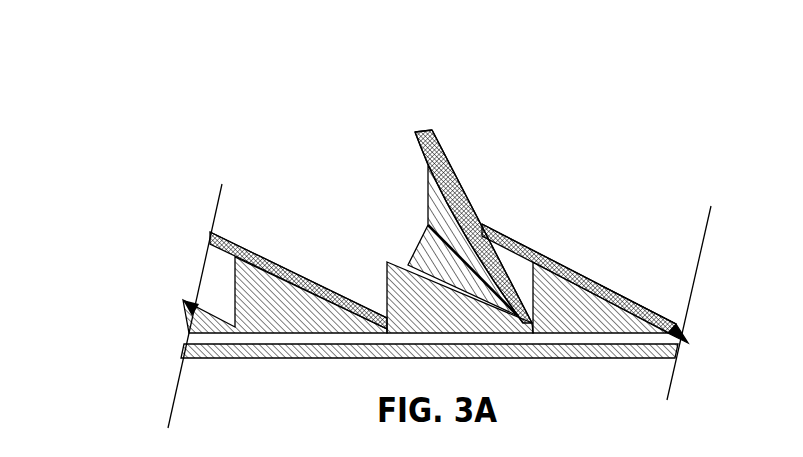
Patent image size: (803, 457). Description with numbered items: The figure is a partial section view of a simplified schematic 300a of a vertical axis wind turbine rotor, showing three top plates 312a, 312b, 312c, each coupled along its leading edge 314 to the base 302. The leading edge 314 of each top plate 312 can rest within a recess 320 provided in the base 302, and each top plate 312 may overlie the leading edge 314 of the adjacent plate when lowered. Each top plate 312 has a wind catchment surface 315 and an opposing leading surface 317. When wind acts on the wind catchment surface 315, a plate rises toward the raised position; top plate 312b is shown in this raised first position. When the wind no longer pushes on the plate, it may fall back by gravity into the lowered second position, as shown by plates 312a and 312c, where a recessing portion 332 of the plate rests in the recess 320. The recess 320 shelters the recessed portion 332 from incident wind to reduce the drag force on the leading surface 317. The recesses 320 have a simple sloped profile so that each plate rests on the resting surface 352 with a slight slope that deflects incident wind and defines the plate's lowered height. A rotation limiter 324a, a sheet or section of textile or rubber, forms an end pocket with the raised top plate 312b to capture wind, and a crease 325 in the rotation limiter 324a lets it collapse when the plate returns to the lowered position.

The schematic 300a is at (200, 110).
The base 302 is at (542, 337).
The top plate 312 is at (521, 234).
The top plate 312a is at (262, 250).
The top plate 312b is at (427, 130).
The top plate 312c is at (612, 278).
The leading edge 314 is at (380, 329).
The wind catchment surface 315 is at (410, 146).
The leading surface 317 is at (452, 152).
The recess 320 is at (343, 275).
The rotation limiter 324a is at (428, 178).
The crease 325 is at (445, 238).
The recessing portion 332 is at (586, 256).
The resting surface 352 is at (385, 257).